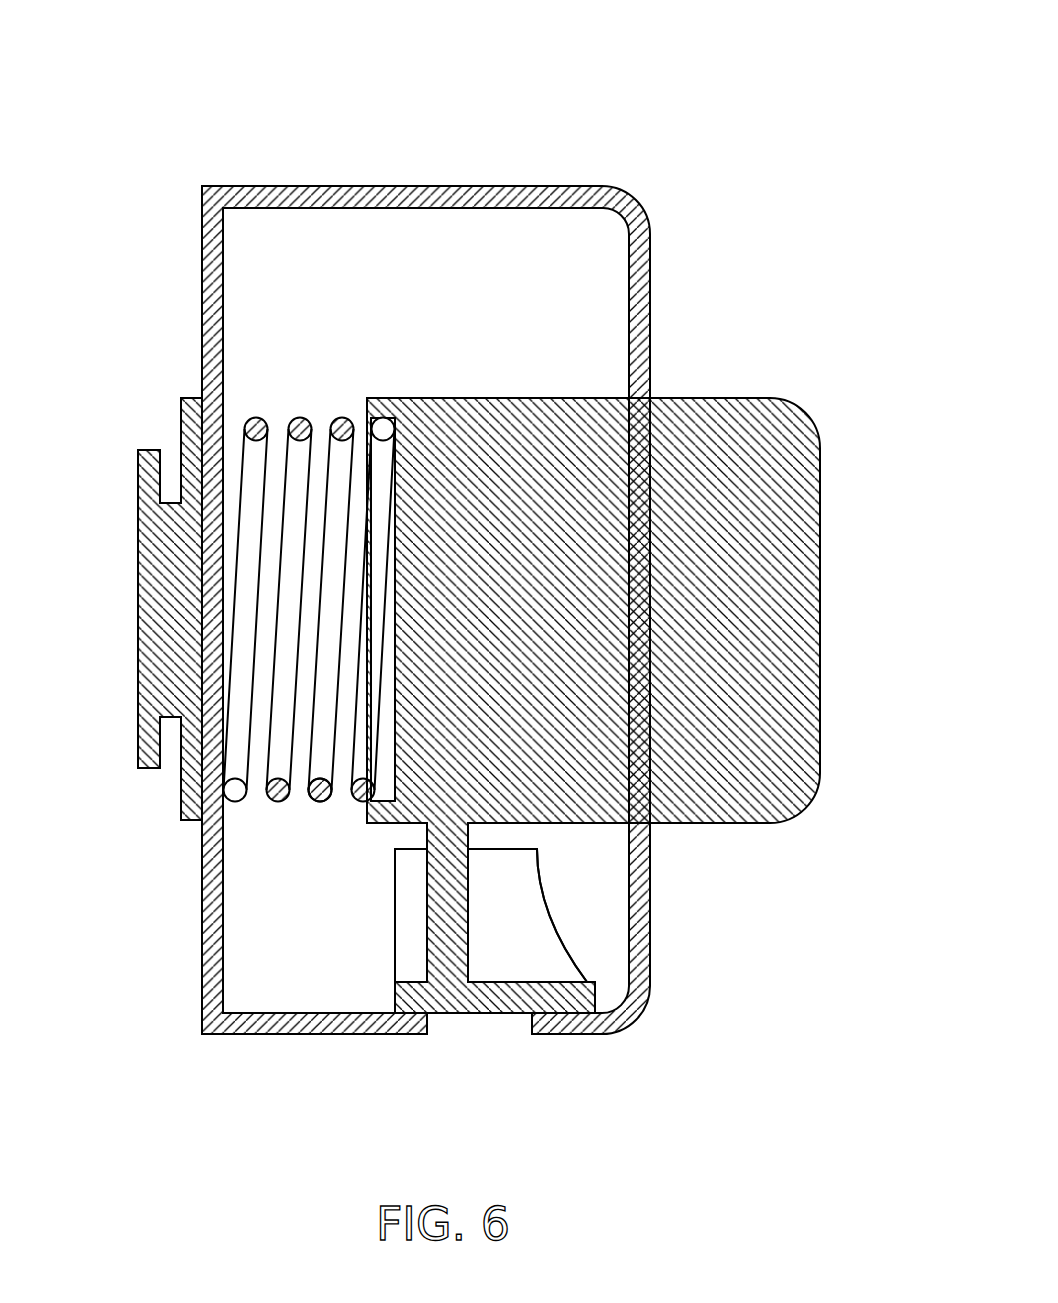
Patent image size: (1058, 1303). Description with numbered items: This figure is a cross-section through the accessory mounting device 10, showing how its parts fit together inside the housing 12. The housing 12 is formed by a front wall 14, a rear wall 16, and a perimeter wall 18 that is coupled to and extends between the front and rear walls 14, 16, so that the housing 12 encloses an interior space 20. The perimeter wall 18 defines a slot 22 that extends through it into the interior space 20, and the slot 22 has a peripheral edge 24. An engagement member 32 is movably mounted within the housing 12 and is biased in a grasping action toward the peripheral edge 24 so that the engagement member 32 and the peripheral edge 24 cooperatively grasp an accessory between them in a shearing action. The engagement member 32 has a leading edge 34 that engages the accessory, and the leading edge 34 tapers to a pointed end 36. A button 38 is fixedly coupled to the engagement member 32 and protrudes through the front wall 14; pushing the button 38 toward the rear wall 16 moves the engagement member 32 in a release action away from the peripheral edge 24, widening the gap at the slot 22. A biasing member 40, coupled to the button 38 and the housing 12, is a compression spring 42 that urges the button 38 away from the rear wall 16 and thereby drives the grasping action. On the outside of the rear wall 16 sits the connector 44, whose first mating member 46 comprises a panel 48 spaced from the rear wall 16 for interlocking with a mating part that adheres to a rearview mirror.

The accessory mounting device 10 is at (708, 84).
The housing 12 is at (675, 215).
The front wall 14 is at (650, 303).
The rear wall 16 is at (225, 297).
The perimeter wall 18 is at (410, 186).
The interior space 20 is at (308, 972).
The slot 22 is at (505, 1052).
The peripheral edge 24 is at (527, 1043).
The engagement member 32 is at (507, 945).
The leading edge 34 is at (553, 930).
The pointed end 36 is at (597, 992).
The button 38 is at (795, 568).
The biasing member 40 is at (266, 835).
The compression spring 42 is at (322, 798).
The connector 44 is at (82, 372).
The first mating member 46 is at (138, 425).
The panel 48 is at (138, 485).